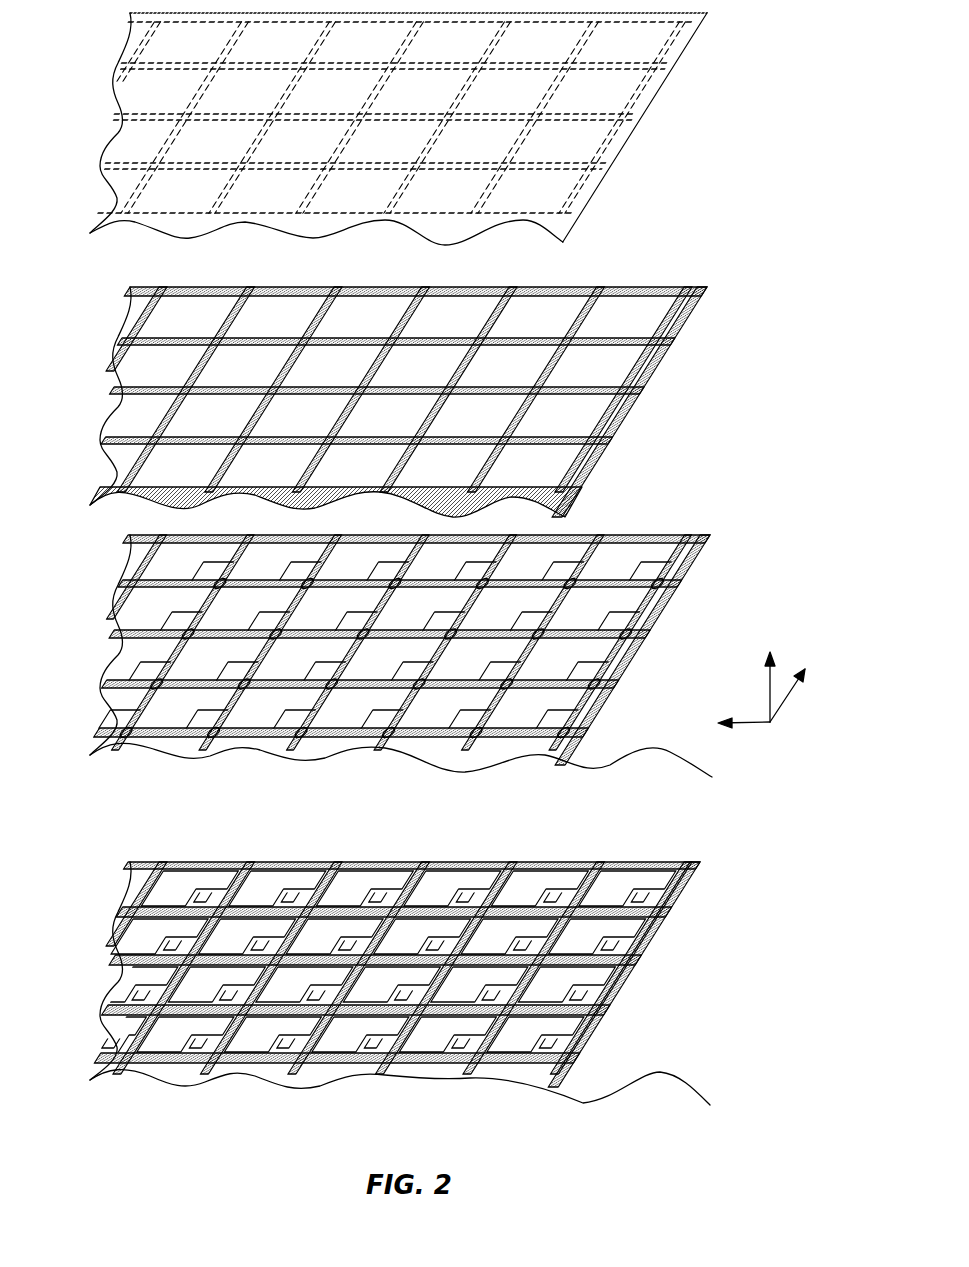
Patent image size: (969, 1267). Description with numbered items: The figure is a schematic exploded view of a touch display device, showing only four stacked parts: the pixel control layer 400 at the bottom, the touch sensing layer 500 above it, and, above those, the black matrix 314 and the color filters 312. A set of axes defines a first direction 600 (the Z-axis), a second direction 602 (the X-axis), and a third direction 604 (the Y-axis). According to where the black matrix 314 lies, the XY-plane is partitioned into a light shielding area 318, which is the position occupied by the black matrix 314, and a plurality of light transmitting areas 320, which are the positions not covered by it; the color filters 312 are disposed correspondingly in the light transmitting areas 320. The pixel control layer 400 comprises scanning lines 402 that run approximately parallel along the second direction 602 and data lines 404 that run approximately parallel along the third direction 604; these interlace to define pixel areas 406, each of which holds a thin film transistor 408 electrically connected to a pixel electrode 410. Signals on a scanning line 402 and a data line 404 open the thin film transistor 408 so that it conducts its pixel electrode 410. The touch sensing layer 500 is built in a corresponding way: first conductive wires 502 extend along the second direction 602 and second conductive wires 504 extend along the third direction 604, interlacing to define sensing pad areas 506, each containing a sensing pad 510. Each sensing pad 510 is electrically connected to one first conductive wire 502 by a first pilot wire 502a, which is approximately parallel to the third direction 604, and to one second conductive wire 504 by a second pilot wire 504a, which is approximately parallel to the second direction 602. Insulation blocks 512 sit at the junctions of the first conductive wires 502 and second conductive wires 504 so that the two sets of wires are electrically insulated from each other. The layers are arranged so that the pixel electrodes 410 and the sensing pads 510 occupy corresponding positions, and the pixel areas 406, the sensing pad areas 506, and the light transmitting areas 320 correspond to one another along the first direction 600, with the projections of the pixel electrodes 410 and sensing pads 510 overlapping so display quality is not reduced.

The light shielding area 318 is at (617, 153).
The light transmitting areas 320 is at (630, 87).
The black matrix 314 is at (683, 330).
The color filters 312 is at (580, 413).
The touch sensing layer 500 is at (408, 621).
The sensing pads 510 is at (628, 553).
The insulation blocks 512 is at (640, 637).
The first conductive wires 502 is at (127, 578).
The second conductive wires 504 is at (242, 548).
The sensing pad areas 506 is at (683, 543).
The second pilot wire 504a is at (673, 573).
The first pilot wire 502a is at (650, 592).
The first direction 600 is at (765, 722).
The second direction 602 is at (763, 727).
The third direction 604 is at (793, 702).
The pixel control layer 400 is at (403, 949).
The pixel areas 406 is at (693, 878).
The scanning lines 402 is at (117, 957).
The data lines 404 is at (200, 925).
The pixel electrodes 410 is at (547, 883).
The thin film transistors 408 is at (673, 905).